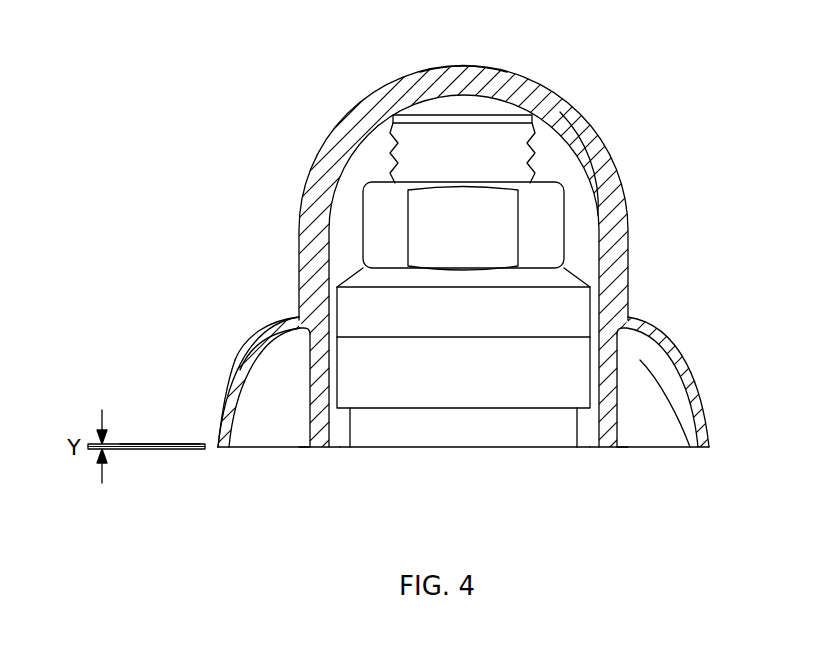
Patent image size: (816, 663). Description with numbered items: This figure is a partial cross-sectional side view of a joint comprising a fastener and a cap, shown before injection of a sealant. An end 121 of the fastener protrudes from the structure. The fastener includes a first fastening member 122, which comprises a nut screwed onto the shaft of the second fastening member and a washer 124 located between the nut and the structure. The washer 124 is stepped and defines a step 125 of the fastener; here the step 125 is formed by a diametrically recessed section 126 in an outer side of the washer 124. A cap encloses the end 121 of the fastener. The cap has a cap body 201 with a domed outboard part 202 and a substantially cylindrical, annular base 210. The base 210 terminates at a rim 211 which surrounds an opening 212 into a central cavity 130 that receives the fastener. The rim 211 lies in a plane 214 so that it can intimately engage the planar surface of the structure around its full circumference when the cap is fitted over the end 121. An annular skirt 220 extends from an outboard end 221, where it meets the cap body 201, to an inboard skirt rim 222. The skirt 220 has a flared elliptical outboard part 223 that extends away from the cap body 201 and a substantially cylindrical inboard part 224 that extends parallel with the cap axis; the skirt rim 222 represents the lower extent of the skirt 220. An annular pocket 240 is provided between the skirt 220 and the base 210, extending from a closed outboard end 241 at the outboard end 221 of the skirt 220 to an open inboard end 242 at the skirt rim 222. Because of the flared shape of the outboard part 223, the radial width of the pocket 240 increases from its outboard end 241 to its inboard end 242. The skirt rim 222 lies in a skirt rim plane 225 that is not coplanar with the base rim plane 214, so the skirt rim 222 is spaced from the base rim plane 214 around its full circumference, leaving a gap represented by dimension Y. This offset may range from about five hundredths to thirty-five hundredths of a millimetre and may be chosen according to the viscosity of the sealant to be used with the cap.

The end of the fastener 121 is at (415, 160).
The first fastening member 122 is at (542, 210).
The washer 124 is at (555, 433).
The step 125 is at (578, 410).
The diametrically recessed section 126 is at (452, 435).
The central cavity 130 is at (582, 210).
The cap body 201 is at (593, 155).
The domed outboard part 202 is at (477, 82).
The base 210 is at (618, 345).
The rim 211 is at (607, 448).
The opening 212 is at (338, 448).
The plane 214 is at (128, 450).
The annular skirt 220 is at (253, 327).
The outboard end 221 is at (635, 312).
The skirt rim 222 is at (703, 447).
The flared elliptical outboard part 223 is at (240, 345).
The substantially cylindrical inboard part 224 is at (222, 392).
The skirt rim plane 225 is at (157, 445).
The annular pocket 240 is at (657, 415).
The closed outboard end 241 is at (287, 345).
The open inboard end 242 is at (275, 435).